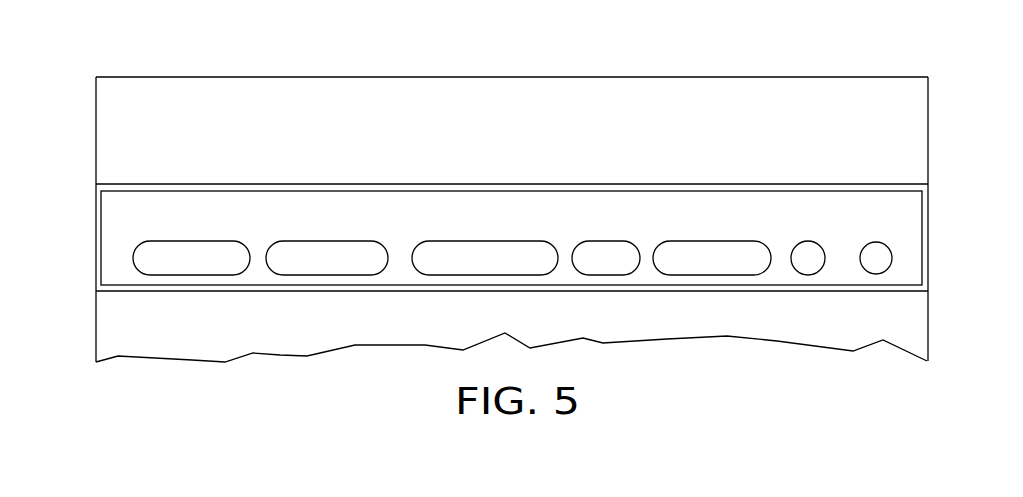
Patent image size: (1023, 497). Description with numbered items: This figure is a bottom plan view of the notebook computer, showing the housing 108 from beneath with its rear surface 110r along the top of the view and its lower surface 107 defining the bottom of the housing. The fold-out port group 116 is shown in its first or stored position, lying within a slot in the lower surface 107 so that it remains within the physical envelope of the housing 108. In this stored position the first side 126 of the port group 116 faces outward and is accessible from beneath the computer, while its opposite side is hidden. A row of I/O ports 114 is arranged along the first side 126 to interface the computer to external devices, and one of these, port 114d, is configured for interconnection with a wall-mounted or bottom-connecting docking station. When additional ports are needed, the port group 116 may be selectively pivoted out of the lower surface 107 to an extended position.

The housing 108 is at (933, 128).
The rear surface 110r is at (156, 77).
The first side 126 is at (119, 206).
The fold-out port group 116 is at (904, 212).
The I/O ports 114 is at (227, 196).
The docking station port 114d is at (488, 240).
The lower surface 107 is at (900, 323).